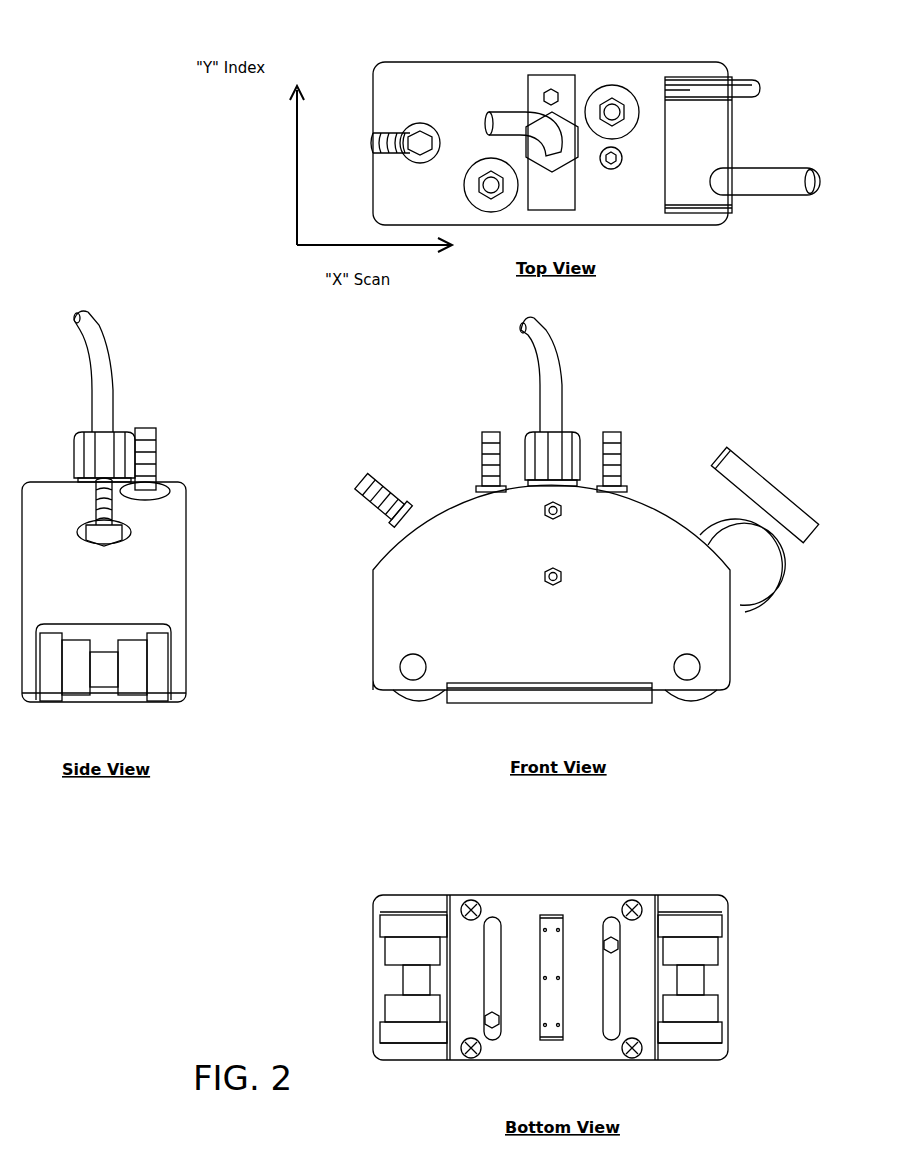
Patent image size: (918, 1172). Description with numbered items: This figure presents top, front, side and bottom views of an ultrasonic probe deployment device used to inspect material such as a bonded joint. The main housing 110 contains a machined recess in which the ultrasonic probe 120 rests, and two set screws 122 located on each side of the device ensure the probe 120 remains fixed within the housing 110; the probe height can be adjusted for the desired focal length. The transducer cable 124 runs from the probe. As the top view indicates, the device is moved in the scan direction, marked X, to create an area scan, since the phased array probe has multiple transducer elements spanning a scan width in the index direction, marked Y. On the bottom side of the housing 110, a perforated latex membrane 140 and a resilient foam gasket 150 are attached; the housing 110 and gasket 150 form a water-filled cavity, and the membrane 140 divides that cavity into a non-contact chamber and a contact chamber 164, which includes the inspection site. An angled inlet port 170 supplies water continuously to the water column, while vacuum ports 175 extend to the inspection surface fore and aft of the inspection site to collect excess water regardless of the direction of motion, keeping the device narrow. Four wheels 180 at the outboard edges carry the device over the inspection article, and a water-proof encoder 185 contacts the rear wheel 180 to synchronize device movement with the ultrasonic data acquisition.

The main housing 110 is at (376, 557).
The ultrasonic probe 120 is at (582, 213).
The set screws 122 is at (583, 367).
The transducer cable 124 is at (335, 288).
The perforated latex membrane 140 is at (602, 688).
The foam gasket 150 is at (456, 708).
The contact chamber 164 is at (552, 920).
The angled inlet port 170 is at (250, 334).
The vacuum ports 175 is at (606, 103).
The wheels 180 is at (160, 705).
The water-proof encoder 185 is at (762, 555).